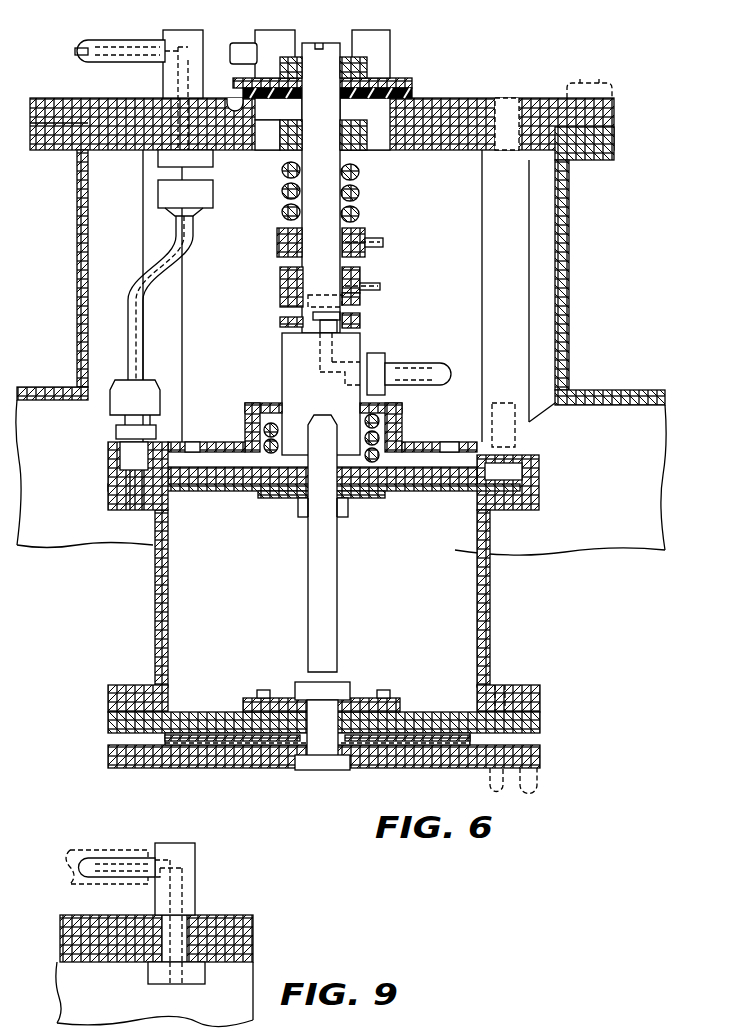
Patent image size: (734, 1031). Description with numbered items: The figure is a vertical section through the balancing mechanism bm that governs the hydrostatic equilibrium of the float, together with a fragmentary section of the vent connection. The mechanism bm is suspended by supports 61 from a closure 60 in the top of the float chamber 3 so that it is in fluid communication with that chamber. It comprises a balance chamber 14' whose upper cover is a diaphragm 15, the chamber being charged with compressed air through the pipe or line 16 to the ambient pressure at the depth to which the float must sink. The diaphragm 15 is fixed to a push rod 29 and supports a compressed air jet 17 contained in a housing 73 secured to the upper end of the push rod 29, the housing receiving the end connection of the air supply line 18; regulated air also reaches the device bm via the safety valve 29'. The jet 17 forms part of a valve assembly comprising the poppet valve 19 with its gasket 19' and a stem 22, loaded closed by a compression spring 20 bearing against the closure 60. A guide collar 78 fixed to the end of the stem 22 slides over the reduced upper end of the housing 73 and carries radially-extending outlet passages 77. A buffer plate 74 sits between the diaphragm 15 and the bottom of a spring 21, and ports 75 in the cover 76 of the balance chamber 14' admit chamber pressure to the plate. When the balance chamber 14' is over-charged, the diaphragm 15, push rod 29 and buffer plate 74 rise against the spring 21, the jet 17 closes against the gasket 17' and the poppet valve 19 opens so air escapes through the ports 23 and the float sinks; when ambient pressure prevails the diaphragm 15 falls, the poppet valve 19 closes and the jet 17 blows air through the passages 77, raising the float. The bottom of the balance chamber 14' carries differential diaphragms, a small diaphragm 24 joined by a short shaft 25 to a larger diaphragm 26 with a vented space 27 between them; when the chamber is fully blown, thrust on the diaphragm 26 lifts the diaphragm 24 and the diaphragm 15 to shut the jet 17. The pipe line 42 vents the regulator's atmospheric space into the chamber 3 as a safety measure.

In FIG. 6, the closure 60 is at (547, 108).
In FIG. 9, the closure 60 is at (233, 918).
In FIG. 6, the balancing mechanism bm is at (455, 562).
In FIG. 6, the chamber 3 is at (67, 517).
In FIG. 9, the chamber 3 is at (121, 988).
In FIG. 6, the supports 61 is at (486, 197).
In FIG. 6, the poppet valve 19 is at (336, 67).
In FIG. 6, the gasket 19' is at (332, 62).
In FIG. 6, the safety valve 29' is at (297, 167).
In FIG. 6, the air supply line 18 is at (237, 48).
In FIG. 6, the ports 23 is at (380, 137).
In FIG. 6, the compression spring 20 is at (358, 196).
In FIG. 6, the guide collar 78 is at (282, 279).
In FIG. 6, the valve stem 22 is at (322, 280).
In FIG. 6, the gasket 17' is at (357, 301).
In FIG. 6, the outlet passages 77 is at (283, 320).
In FIG. 6, the compressed air jet 17 is at (370, 324).
In FIG. 6, the housing 73 is at (282, 350).
In FIG. 6, the spring 21 is at (245, 418).
In FIG. 6, the cover 76 is at (398, 422).
In FIG. 6, the ports 75 is at (190, 441).
In FIG. 6, the balance chamber 14' is at (324, 583).
In FIG. 6, the buffer plate 74 is at (190, 490).
In FIG. 6, the diaphragm 15 is at (427, 490).
In FIG. 6, the pipe or line 16 is at (172, 50).
In FIG. 6, the larger area diaphragm 26 is at (440, 748).
In FIG. 6, the space 27 is at (234, 734).
In FIG. 6, the small area diaphragm 24 is at (370, 698).
In FIG. 6, the push rod 29 is at (335, 585).
In FIG. 6, the short shaft 25 is at (323, 740).
In FIG. 9, the pipe line 42 is at (108, 856).